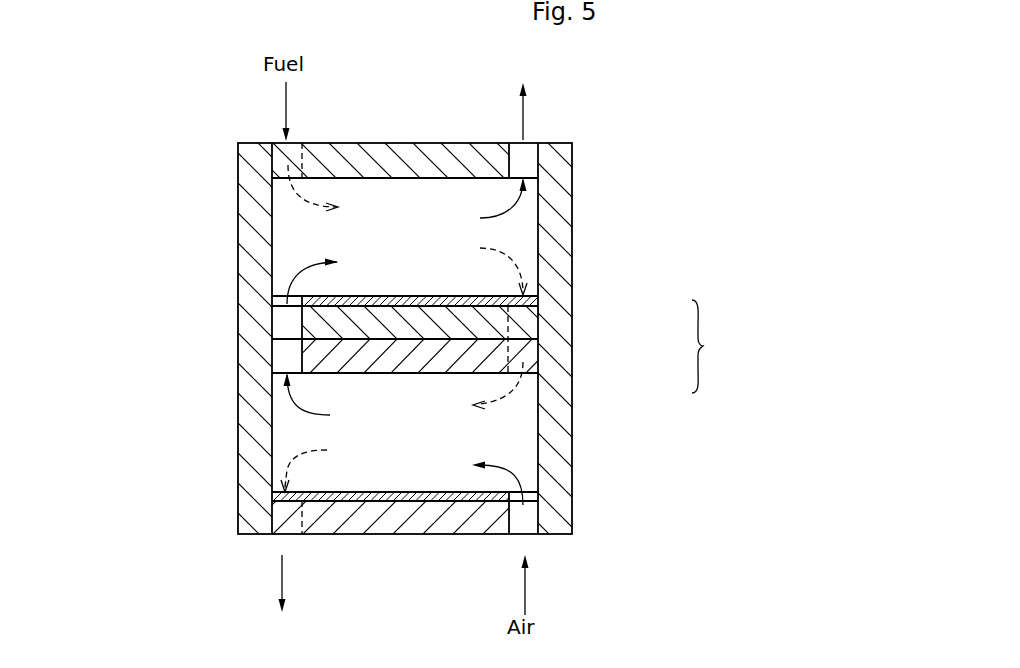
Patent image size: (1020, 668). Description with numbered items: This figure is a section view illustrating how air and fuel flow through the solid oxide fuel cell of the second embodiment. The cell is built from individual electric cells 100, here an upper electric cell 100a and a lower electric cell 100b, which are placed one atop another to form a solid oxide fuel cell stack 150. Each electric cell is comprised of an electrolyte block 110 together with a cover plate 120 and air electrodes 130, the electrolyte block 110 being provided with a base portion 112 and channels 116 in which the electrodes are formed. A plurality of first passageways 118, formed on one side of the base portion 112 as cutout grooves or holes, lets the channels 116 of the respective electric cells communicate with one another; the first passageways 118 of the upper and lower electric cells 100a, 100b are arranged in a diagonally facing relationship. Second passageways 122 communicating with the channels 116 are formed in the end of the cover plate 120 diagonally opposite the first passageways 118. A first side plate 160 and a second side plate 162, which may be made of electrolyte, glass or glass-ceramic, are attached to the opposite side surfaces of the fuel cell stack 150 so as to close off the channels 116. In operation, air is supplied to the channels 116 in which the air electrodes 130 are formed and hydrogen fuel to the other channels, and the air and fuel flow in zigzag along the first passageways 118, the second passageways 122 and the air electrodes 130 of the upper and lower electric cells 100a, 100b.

The individual electric cells 100 is at (717, 346).
The upper electric cell 100a is at (686, 320).
The lower electric cell 100b is at (686, 390).
The electrolyte block 110 is at (460, 135).
The base portion 112 is at (313, 324).
The channels 116 is at (366, 232).
The first passageways 118 is at (283, 302).
The cover plate 120 is at (312, 350).
The second passageways 122 is at (530, 153).
The air electrodes 130 is at (397, 301).
The solid oxide fuel cell stack 150 is at (181, 123).
The first side plate 160 is at (558, 481).
The second side plate 162 is at (250, 392).